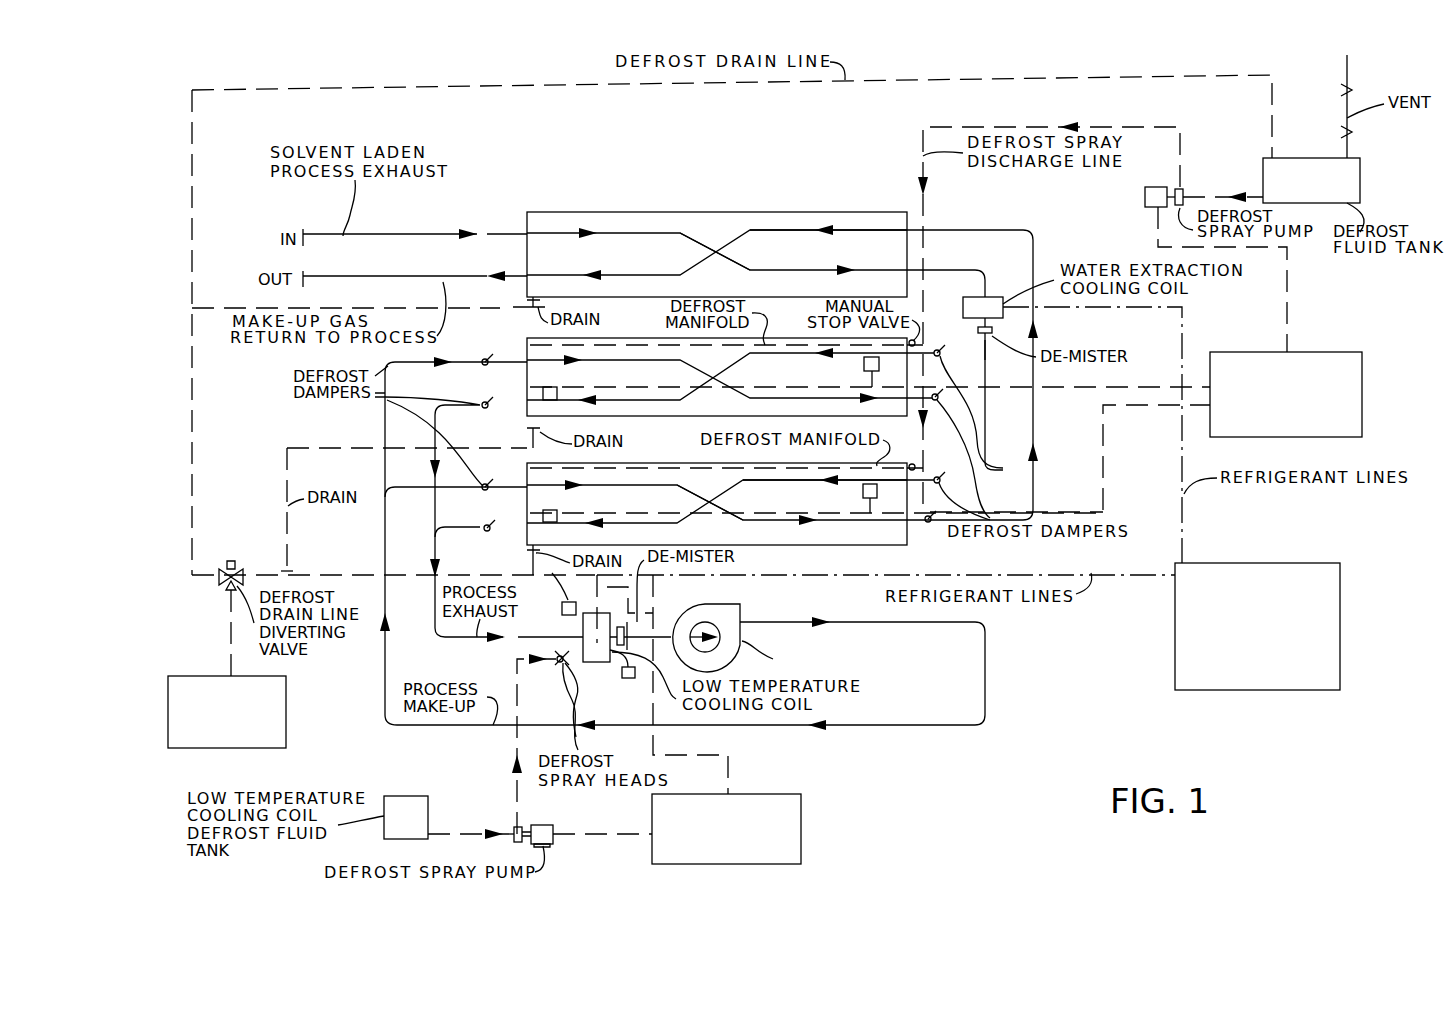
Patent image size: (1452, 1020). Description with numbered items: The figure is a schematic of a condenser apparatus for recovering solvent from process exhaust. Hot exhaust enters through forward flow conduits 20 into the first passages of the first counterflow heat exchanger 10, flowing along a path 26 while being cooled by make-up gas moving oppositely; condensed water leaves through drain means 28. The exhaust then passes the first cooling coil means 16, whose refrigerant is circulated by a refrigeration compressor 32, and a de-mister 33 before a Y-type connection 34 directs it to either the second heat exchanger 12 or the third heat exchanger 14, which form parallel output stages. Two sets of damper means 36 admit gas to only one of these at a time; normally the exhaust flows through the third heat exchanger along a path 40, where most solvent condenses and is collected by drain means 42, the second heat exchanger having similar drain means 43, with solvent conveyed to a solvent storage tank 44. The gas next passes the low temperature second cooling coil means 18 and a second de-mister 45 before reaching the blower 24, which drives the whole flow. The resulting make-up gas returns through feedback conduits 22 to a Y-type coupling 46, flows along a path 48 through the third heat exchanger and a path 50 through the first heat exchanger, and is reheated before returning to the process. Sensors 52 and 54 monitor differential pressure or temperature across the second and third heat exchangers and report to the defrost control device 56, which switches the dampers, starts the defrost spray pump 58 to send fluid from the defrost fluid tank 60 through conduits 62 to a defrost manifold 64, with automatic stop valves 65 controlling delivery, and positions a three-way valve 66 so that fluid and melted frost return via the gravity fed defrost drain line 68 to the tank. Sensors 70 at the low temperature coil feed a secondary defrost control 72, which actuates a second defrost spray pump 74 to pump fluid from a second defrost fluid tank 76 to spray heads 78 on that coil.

The first counterflow heat exchanger 10 is at (563, 212).
The second counterflow heat exchanger 12 is at (610, 340).
The third counterflow heat exchanger 14 is at (682, 463).
The first cooling coil means 16 is at (1003, 310).
The second cooling coil means 18 is at (597, 664).
The forward flow conduits 20 is at (391, 236).
The feedback conduits 22 is at (391, 277).
The blower 24 is at (742, 604).
The path 26 is at (693, 242).
The drain means 28 is at (500, 309).
The refrigeration compressor 32 is at (1340, 645).
The de-mister 33 is at (993, 331).
The Y-type connection 34 is at (994, 338).
The damper means 36 is at (490, 366).
The path 40 is at (743, 484).
The drain means 42 is at (338, 574).
The drain means 43 is at (322, 448).
The solvent storage tank 44 is at (201, 676).
The second de-mister 45 is at (620, 627).
The Y-type coupling 46 is at (385, 497).
The path 48 is at (700, 495).
The path 50 is at (783, 230).
The sensors 52 is at (558, 393).
The sensors 54 is at (557, 514).
The defrost control device 56 is at (1322, 352).
The defrost spray pump 58 is at (1156, 187).
The defrost fluid tank 60 is at (1308, 158).
The conduits 62 is at (978, 127).
The defrost manifold 64 is at (640, 345).
The automatic stop valves 65 is at (913, 341).
The three-way valve 66 is at (227, 586).
The defrost drain line 68 is at (430, 88).
The sensors 70 is at (628, 697).
The secondary defrost control 72 is at (772, 794).
The second defrost spray pump 74 is at (553, 829).
The second defrost fluid tank 76 is at (430, 813).
The spray heads 78 is at (560, 665).